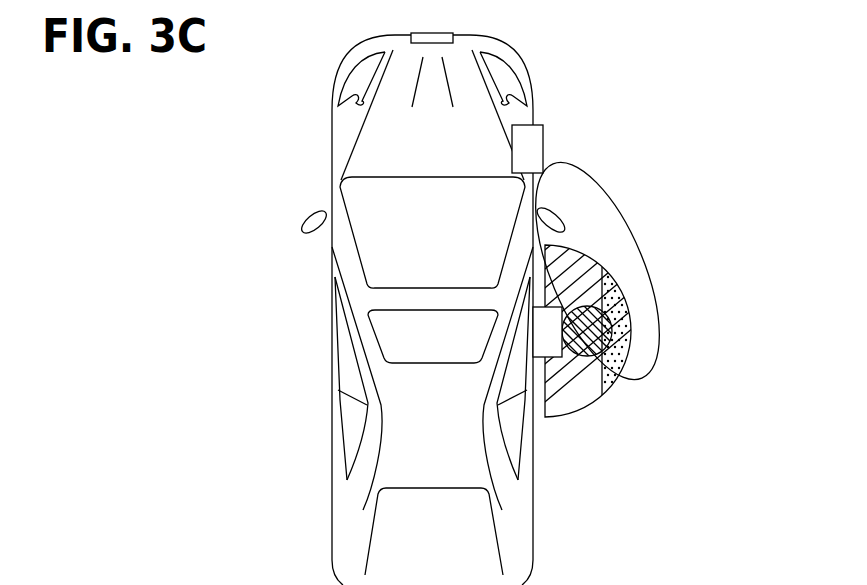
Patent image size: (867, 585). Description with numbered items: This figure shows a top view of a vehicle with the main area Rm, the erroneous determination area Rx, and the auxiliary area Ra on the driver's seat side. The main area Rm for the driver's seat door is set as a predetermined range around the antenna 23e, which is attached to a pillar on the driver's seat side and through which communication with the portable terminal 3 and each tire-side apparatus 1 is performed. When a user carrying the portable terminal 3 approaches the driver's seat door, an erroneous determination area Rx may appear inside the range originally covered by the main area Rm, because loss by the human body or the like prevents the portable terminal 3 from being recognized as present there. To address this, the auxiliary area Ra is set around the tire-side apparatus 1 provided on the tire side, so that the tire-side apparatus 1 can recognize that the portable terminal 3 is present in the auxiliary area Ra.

The tire-side apparatus 1 is at (540, 123).
The portable terminal 3 is at (610, 323).
The antenna 23e is at (576, 250).
The auxiliary area Ra is at (617, 205).
The main area Rm is at (570, 417).
The erroneous determination area Rx is at (606, 378).